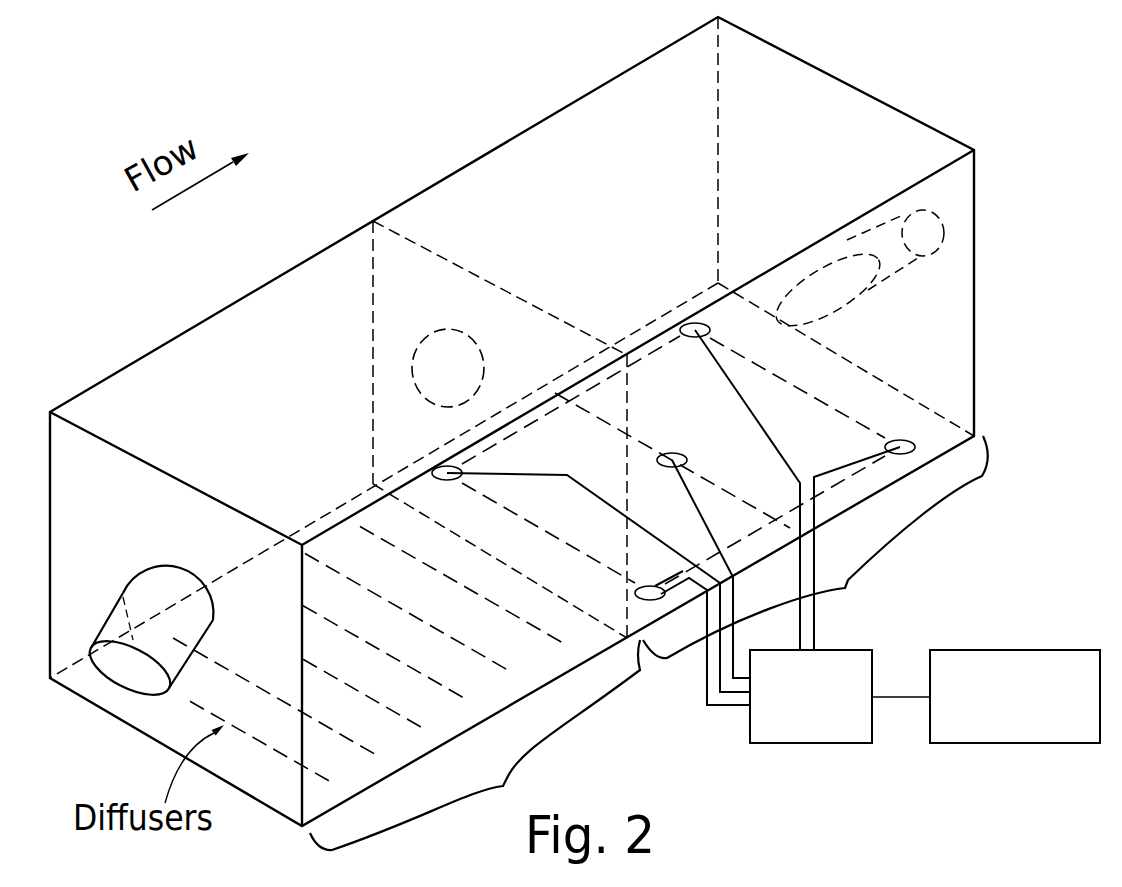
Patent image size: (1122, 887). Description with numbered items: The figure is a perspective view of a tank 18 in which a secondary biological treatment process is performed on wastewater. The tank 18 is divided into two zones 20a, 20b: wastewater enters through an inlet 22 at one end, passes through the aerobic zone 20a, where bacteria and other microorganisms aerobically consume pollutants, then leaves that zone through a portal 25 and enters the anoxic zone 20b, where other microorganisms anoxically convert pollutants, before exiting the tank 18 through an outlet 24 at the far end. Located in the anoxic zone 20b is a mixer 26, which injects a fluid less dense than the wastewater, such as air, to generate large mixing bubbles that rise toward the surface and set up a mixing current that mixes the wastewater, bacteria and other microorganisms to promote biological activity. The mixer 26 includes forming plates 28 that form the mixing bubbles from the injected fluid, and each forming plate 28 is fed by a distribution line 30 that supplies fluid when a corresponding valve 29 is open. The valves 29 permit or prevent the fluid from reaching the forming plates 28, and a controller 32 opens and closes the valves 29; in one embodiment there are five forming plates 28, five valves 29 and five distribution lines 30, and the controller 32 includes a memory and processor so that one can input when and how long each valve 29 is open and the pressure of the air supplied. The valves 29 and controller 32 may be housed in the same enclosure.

The tank 18 is at (132, 290).
The aerobic zone 20a is at (475, 745).
The anoxic zone 20b is at (815, 547).
The inlet 22 is at (120, 691).
The outlet 24 is at (877, 233).
The portal 25 is at (448, 329).
The mixer 26 is at (799, 422).
The forming plate 28 is at (900, 440).
The valve 29 is at (811, 745).
The distribution line 30 is at (801, 560).
The controller 32 is at (985, 650).